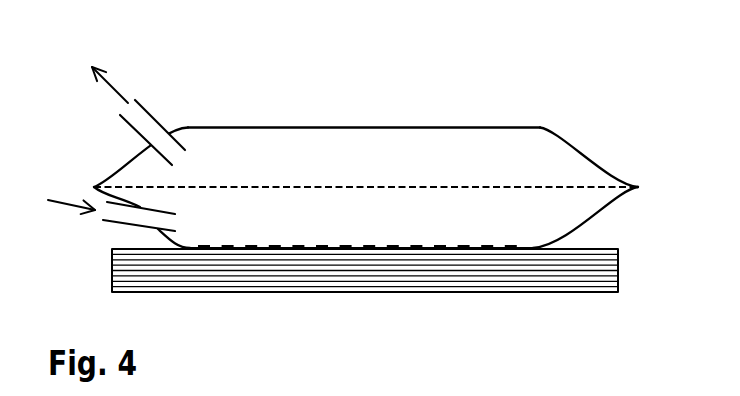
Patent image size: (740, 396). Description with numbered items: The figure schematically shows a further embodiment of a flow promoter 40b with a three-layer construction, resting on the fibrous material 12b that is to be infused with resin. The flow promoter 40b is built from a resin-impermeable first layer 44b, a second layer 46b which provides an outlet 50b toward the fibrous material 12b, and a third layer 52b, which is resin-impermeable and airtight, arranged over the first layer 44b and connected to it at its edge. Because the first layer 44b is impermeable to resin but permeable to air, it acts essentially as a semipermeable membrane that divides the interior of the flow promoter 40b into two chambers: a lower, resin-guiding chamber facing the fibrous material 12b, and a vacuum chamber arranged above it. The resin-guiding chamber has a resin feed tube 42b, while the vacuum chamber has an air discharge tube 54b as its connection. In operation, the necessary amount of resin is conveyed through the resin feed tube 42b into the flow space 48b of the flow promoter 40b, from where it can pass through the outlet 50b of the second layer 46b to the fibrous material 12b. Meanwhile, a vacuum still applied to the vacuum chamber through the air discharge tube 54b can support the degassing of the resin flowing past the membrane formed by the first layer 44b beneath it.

The fibrous material 12b is at (405, 275).
The flow promoter 40b is at (372, 179).
The resin feed tube 42b is at (118, 225).
The first layer 44b is at (262, 185).
The second layer 46b is at (268, 250).
The flow space 48b is at (568, 222).
The outlet 50b is at (357, 227).
The third layer 52b is at (413, 127).
The air discharge tube 54b is at (148, 112).